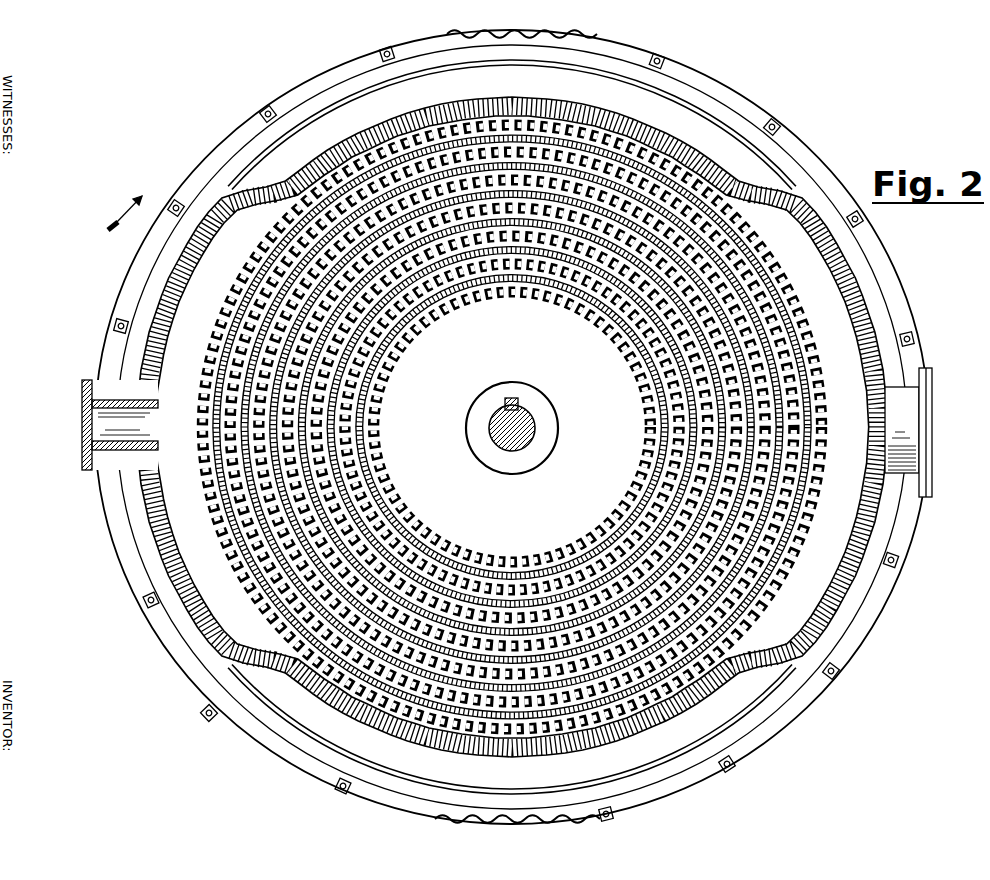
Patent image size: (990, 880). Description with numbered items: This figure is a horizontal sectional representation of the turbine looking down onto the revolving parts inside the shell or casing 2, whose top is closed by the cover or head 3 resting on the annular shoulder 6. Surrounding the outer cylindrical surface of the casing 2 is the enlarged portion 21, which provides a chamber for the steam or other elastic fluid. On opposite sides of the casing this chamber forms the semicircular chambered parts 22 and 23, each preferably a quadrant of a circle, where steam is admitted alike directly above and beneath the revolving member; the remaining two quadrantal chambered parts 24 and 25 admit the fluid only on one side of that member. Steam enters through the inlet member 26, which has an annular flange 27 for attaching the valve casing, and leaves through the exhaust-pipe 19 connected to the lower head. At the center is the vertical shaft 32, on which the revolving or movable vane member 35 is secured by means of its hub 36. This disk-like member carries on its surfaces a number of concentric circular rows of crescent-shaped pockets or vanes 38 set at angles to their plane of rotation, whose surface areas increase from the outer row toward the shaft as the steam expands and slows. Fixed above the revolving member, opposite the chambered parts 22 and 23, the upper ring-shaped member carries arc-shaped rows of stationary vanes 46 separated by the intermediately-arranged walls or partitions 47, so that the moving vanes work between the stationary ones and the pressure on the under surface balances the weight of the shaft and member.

The shell or casing 2 is at (170, 248).
The cover or head 3 is at (132, 199).
The annular shoulder 6 is at (215, 197).
The exhaust-pipe 19 is at (927, 417).
The enlarged portion 21 is at (702, 108).
The semicircular chambered part 22 is at (204, 582).
The semicircular chambered part 23 is at (854, 367).
The quadrantal chambered part 24 is at (598, 70).
The quadrantal chambered part 25 is at (512, 730).
The inlet member 26 is at (90, 424).
The annular flange 27 is at (84, 386).
The vertical shaft 32 is at (533, 416).
The revolving or movable vane member 35 is at (549, 492).
The hub 36 is at (550, 440).
The pockets or vanes 38 is at (430, 190).
The arc-shaped rows of vanes 46 is at (372, 392).
The walls or partitions 47 is at (566, 192).